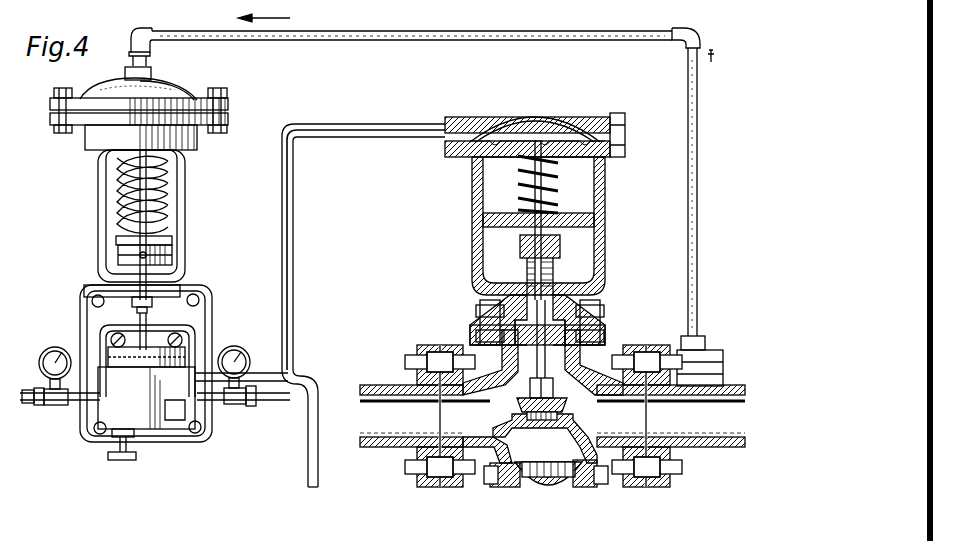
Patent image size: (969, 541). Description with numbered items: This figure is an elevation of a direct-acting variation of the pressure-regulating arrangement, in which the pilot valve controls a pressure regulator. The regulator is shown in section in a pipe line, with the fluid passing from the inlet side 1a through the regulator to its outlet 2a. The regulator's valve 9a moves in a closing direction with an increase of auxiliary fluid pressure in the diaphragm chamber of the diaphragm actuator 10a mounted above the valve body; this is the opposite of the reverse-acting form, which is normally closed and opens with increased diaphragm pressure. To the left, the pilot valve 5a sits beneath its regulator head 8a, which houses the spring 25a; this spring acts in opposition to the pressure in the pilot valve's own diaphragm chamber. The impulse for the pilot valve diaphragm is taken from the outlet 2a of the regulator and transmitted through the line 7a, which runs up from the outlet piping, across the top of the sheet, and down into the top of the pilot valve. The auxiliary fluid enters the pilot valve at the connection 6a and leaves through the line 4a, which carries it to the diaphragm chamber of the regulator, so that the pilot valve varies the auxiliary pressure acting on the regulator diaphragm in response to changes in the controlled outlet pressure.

The inlet 1a is at (462, 423).
The outlet 2a is at (625, 420).
The auxiliary fluid outlet line 4a is at (291, 263).
The pilot valve 5a is at (195, 405).
The auxiliary fluid inlet 6a is at (96, 408).
The impulse line 7a is at (428, 37).
The regulator 8a is at (168, 86).
The valve 9a is at (540, 412).
The diaphragm valve 10a is at (570, 132).
The spring 25a is at (166, 202).